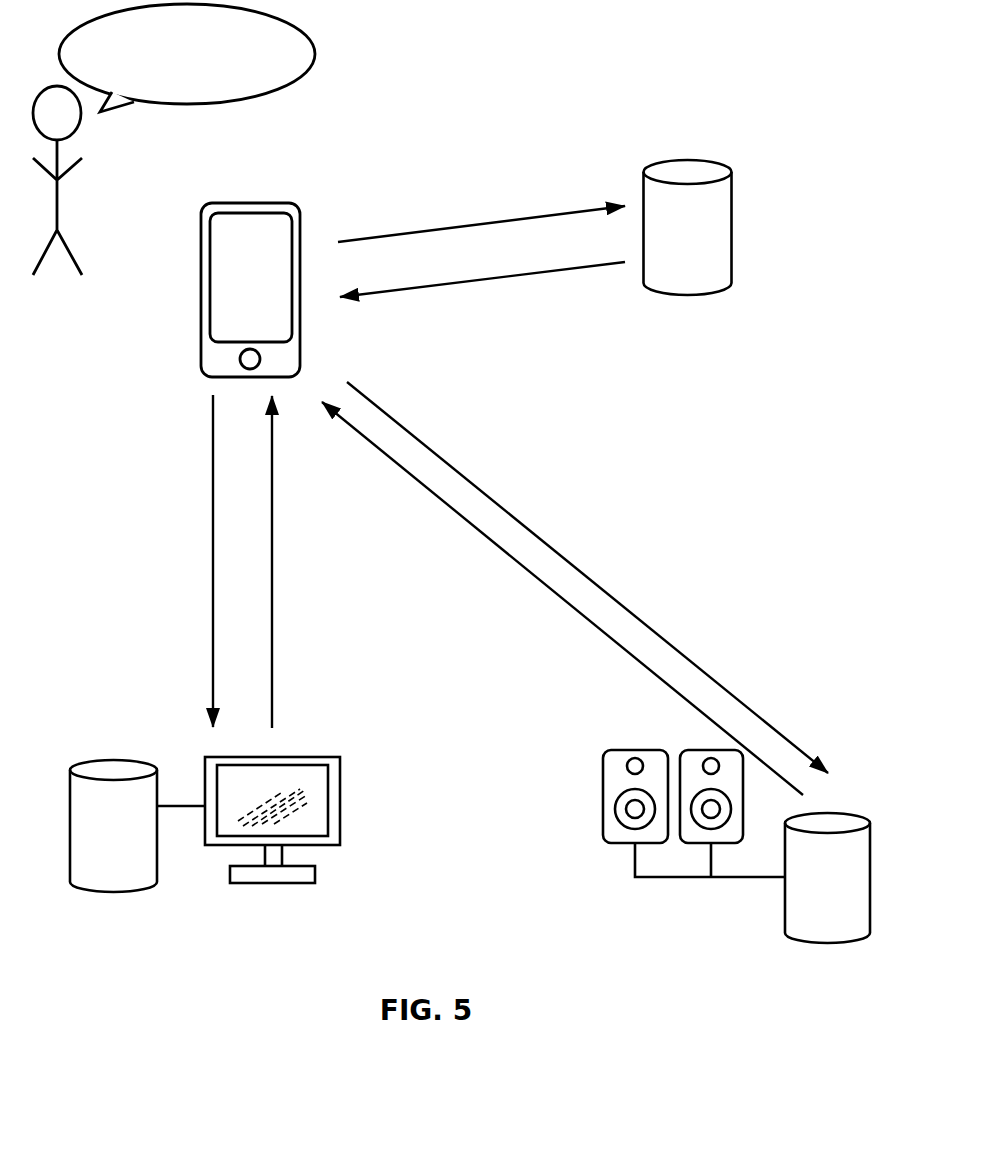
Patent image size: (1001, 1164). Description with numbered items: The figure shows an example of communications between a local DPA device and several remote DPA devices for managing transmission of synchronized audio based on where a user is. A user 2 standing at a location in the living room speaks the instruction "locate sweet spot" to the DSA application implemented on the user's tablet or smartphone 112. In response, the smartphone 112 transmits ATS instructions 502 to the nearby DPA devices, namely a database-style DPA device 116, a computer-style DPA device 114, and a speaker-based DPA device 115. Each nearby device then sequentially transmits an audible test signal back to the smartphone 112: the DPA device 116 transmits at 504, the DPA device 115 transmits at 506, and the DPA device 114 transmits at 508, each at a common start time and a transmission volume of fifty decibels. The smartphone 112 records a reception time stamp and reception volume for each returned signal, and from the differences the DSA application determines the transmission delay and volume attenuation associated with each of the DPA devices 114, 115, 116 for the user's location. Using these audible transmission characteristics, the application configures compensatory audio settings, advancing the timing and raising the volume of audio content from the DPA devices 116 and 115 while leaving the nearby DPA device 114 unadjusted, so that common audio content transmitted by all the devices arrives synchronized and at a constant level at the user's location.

The user 2 is at (118, 136).
The smartphone 112 is at (270, 203).
The DPA device 114 is at (113, 760).
The DPA device 115 is at (832, 813).
The DPA device 116 is at (707, 160).
The request signal 502 is at (518, 217).
The ATS transmission 504 is at (545, 273).
The ATS transmission 506 is at (500, 552).
The ATS transmission 508 is at (272, 588).